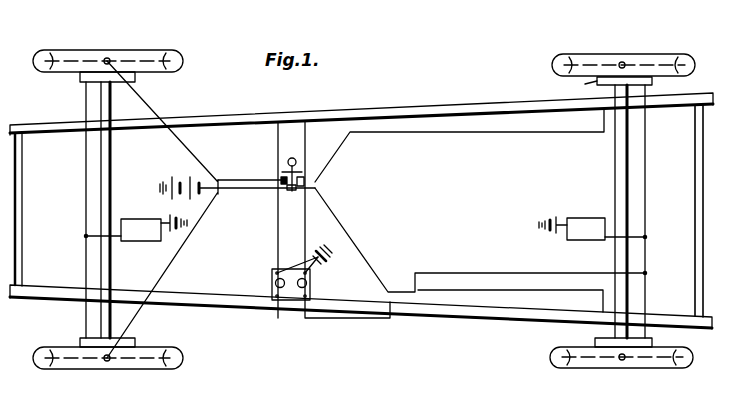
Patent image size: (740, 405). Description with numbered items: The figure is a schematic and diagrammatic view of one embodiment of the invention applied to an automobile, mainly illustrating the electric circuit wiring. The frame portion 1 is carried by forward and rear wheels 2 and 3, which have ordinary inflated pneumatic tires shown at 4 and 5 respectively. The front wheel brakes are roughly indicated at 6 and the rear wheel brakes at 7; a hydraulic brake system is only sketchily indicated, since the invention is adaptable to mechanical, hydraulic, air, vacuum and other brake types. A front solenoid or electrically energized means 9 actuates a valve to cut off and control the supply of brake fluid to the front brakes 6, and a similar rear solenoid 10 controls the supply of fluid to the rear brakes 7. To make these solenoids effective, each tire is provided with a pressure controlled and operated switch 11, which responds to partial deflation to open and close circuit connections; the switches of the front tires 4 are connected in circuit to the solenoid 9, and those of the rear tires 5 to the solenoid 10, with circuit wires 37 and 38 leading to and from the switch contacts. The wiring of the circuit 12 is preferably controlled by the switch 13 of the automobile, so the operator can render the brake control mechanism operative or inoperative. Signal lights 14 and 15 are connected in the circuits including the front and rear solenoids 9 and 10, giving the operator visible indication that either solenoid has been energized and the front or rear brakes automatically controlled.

The frame portion 1 is at (58, 297).
The forward wheels 2 is at (58, 68).
The rear wheels 3 is at (676, 60).
The front tires 4 is at (183, 66).
The rear tires 5 is at (552, 356).
The front wheel brakes 6 is at (136, 80).
The rear wheel brakes 7 is at (597, 80).
The front solenoid 9 is at (152, 213).
The rear solenoid 10 is at (595, 241).
The pressure controlled switch 11 is at (108, 58).
The circuit wiring 12 is at (456, 130).
The switch 13 is at (315, 186).
The signal light 14 is at (272, 283).
The signal light 15 is at (310, 283).
The circuit wire 37 is at (86, 111).
The circuit wire 38 is at (155, 103).